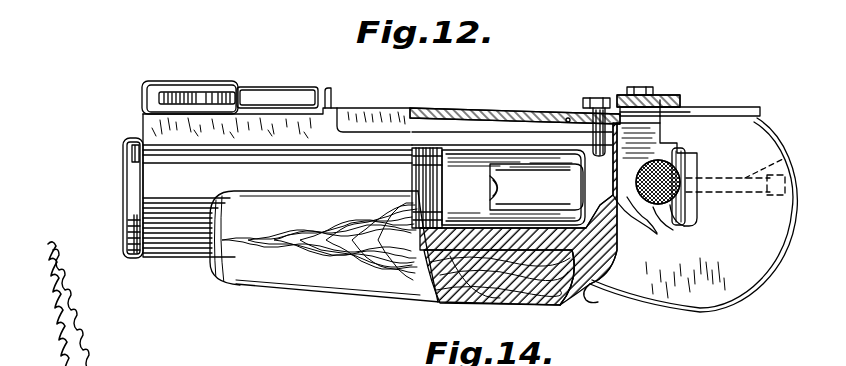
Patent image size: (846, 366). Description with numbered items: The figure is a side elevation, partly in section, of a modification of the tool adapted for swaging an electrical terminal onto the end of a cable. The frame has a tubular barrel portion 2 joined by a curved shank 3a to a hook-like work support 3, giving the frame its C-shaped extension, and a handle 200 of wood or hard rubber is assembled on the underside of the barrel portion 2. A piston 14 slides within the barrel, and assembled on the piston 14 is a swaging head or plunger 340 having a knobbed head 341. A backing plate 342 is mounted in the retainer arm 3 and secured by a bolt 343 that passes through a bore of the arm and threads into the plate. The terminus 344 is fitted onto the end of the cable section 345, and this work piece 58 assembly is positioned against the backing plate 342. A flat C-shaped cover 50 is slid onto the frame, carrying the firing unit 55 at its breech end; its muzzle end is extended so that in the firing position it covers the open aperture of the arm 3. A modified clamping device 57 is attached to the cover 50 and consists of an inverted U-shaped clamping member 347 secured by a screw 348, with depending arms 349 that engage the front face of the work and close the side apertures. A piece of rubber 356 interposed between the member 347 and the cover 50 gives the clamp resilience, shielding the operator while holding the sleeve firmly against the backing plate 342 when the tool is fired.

The tubular barrel portion 2 is at (420, 240).
The work support 3 is at (762, 158).
The curved shank 3a is at (590, 300).
The piston 14 is at (437, 150).
The cover 50 is at (735, 107).
The firing unit 55 is at (190, 80).
The clamping device 57 is at (668, 95).
The work piece 58 is at (686, 172).
The handle 200 is at (285, 280).
The swaging head 340 is at (465, 170).
The knobbed head 341 is at (503, 188).
The backing plate 342 is at (690, 145).
The bolt 343 is at (790, 160).
The terminus 344 is at (675, 222).
The cable section 345 is at (680, 192).
The U-shaped clamping member 347 is at (685, 107).
The screw 348 is at (642, 88).
The depending arms 349 is at (645, 226).
The piece of rubber 356 is at (610, 98).